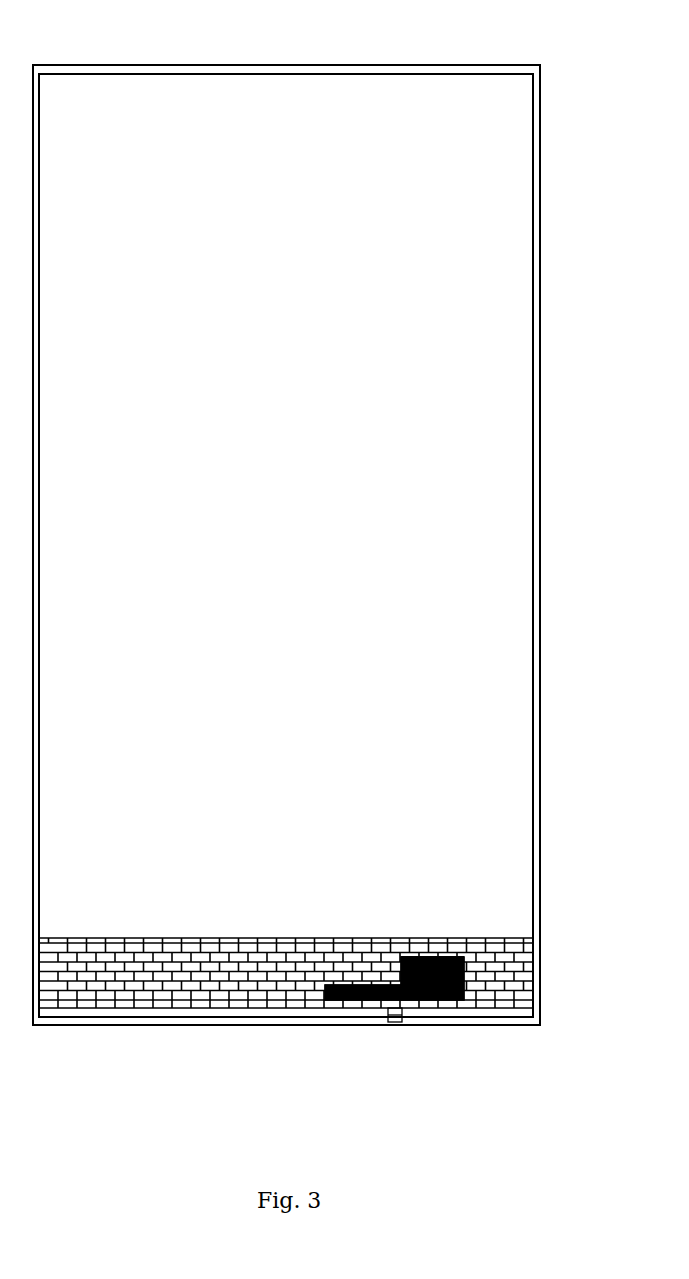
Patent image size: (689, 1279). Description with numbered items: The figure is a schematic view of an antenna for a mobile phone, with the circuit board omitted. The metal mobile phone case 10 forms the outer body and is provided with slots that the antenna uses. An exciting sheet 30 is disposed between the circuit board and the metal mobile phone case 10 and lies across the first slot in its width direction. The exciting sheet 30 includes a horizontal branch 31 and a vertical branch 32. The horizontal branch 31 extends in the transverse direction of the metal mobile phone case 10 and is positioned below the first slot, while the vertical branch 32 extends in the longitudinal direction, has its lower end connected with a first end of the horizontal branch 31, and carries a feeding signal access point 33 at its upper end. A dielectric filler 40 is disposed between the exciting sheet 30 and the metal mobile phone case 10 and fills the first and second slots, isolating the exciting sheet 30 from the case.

The metal mobile phone case 10 is at (272, 158).
The exciting sheet 30 is at (498, 1093).
The horizontal branch 31 is at (363, 1002).
The vertical branch 32 is at (445, 1000).
The feeding signal access point 33 is at (410, 955).
The dielectric filler 40 is at (152, 983).